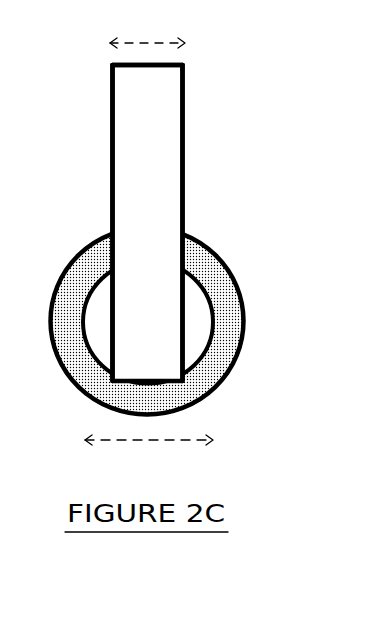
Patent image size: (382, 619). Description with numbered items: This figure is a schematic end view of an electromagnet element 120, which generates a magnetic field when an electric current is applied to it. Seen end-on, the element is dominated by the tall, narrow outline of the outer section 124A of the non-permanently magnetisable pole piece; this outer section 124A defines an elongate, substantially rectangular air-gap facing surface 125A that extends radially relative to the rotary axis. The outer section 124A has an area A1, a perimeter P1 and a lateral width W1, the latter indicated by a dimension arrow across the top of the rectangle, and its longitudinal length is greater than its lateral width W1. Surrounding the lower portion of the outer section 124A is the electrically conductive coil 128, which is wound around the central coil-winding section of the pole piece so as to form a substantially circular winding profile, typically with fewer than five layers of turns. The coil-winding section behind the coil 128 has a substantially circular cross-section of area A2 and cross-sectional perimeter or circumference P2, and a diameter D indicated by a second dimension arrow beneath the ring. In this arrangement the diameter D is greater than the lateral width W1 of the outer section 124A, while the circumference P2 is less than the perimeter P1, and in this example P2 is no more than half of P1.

The electromagnet element 120 is at (202, 60).
The outer section 124A is at (184, 203).
The air-gap facing surface 125A is at (118, 180).
The electrically conductive coil 128 is at (60, 275).
The lateral width W1 is at (147, 31).
The diameter D is at (149, 454).
The perimeter P1 is at (112, 99).
The area A1 is at (184, 137).
The cross-sectional perimeter P2 is at (213, 337).
The cross-sectional area A2 is at (212, 300).